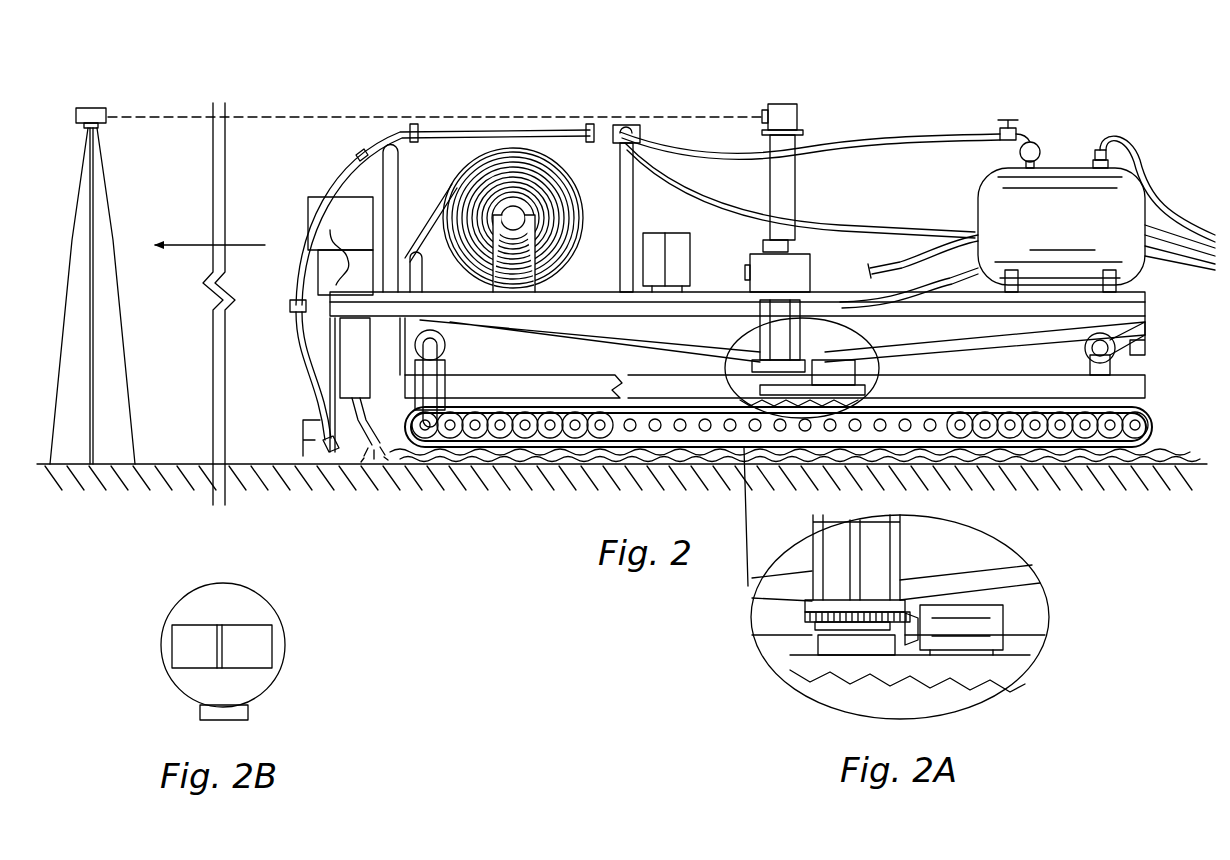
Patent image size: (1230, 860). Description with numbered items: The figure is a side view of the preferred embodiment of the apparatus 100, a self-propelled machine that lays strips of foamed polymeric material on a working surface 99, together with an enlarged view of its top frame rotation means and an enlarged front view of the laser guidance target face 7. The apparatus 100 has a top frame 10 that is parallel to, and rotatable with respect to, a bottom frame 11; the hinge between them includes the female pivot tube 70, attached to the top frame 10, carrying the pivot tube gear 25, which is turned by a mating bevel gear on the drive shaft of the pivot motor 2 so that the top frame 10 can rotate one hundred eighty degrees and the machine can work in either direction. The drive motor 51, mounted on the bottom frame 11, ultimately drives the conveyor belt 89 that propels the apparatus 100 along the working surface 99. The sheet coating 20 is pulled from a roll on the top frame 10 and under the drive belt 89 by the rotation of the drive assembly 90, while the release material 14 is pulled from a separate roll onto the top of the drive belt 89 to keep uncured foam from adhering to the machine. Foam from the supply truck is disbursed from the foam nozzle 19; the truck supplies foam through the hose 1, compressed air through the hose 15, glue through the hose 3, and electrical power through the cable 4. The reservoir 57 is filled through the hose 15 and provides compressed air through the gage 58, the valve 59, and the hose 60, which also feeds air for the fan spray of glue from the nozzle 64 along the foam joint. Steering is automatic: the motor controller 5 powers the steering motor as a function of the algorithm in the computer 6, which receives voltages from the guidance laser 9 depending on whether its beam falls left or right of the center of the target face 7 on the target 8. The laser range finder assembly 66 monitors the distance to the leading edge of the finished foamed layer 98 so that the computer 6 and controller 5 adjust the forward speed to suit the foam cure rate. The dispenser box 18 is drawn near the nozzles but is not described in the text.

In FIG. 2, the apparatus 100 is at (885, 75).
In FIG. 2, the hose 1 is at (848, 226).
In FIG. 2, the pivot motor 2 is at (440, 388).
In FIG. 2A, the pivot motor 2 is at (1005, 616).
In FIG. 2, the hose 3 is at (954, 293).
In FIG. 2, the cable 4 is at (892, 262).
In FIG. 2, the motor controller 5 is at (650, 233).
In FIG. 2, the computer 6 is at (310, 208).
In FIG. 2, the target face 7 is at (106, 118).
In FIG. 2B, the target face 7 is at (198, 588).
In FIG. 2, the target 8 is at (92, 108).
In FIG. 2, the guidance laser 9 is at (797, 110).
In FIG. 2, the top frame 10 is at (620, 280).
In FIG. 2, the bottom frame 11 is at (575, 374).
In FIG. 2, the release material 14 is at (1085, 352).
In FIG. 2, the hose 15 is at (1144, 162).
In FIG. 2, the dispenser box 18 is at (366, 382).
In FIG. 2, the foam nozzle 19 is at (372, 420).
In FIG. 2, the sheet coating 20 is at (428, 230).
In FIG. 2A, the pivot tube gear 25 is at (805, 615).
In FIG. 2, the drive motor 51 is at (446, 345).
In FIG. 2, the reservoir 57 is at (1078, 224).
In FIG. 2, the gage 58 is at (1040, 150).
In FIG. 2, the valve 59 is at (1008, 118).
In FIG. 2, the hose 60 is at (878, 142).
In FIG. 2, the nozzle 64 is at (346, 452).
In FIG. 2, the laser range finder assembly 66 is at (300, 458).
In FIG. 2A, the pivot tube 70 is at (902, 560).
In FIG. 2, the conveyor belt 89 is at (503, 405).
In FIG. 2, the drive assembly 90 is at (1160, 421).
In FIG. 2, the finished foamed layer 98 is at (1000, 468).
In FIG. 2, the working surface 99 is at (186, 463).